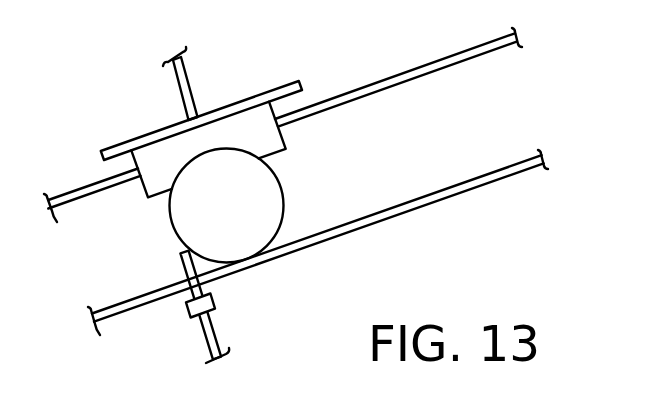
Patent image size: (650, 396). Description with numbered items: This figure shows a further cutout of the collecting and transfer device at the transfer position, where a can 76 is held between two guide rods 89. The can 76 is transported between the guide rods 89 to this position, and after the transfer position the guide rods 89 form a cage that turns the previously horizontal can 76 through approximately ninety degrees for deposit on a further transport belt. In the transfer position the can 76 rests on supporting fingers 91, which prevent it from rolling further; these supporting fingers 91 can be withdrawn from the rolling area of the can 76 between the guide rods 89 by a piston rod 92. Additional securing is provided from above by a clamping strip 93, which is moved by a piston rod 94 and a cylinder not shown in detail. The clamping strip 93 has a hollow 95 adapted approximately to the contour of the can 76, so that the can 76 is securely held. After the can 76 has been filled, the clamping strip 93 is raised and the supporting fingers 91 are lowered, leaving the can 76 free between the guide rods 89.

The can 76 is at (268, 203).
The guide rods 89 is at (422, 75).
The supporting fingers 91 is at (187, 288).
The piston rod 92 is at (214, 334).
The clamping strip 93 is at (256, 121).
The piston rod 94 is at (190, 88).
The hollow 95 is at (208, 150).